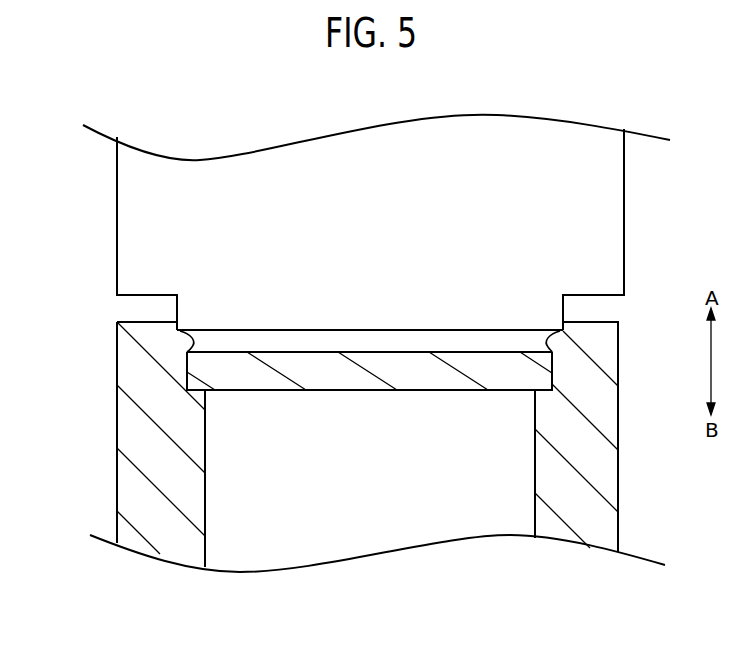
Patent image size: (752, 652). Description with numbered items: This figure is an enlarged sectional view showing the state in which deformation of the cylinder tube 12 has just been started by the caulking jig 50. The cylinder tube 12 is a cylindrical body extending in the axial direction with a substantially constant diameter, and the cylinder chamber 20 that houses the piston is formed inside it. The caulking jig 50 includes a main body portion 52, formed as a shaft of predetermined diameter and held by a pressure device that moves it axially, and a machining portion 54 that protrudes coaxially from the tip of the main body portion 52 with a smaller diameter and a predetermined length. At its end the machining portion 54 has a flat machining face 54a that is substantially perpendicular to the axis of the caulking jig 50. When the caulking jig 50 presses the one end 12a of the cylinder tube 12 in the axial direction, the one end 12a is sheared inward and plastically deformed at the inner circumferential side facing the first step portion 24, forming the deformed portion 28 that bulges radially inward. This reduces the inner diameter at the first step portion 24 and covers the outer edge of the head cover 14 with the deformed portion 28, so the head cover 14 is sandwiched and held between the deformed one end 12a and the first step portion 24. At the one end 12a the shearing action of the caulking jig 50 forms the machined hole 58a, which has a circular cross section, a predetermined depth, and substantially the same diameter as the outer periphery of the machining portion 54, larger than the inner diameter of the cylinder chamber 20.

The caulking jig 50 is at (536, 145).
The main body portion 52 is at (142, 210).
The deformed portion 28 is at (191, 343).
The machined hole 58a is at (555, 328).
The machining portion 54 is at (447, 302).
The machining face 54a is at (308, 322).
The first step portion 24 is at (190, 367).
The cylinder tube 12 is at (107, 427).
The one end 12a is at (598, 320).
The head cover 14 is at (358, 394).
The cylinder chamber 20 is at (327, 535).